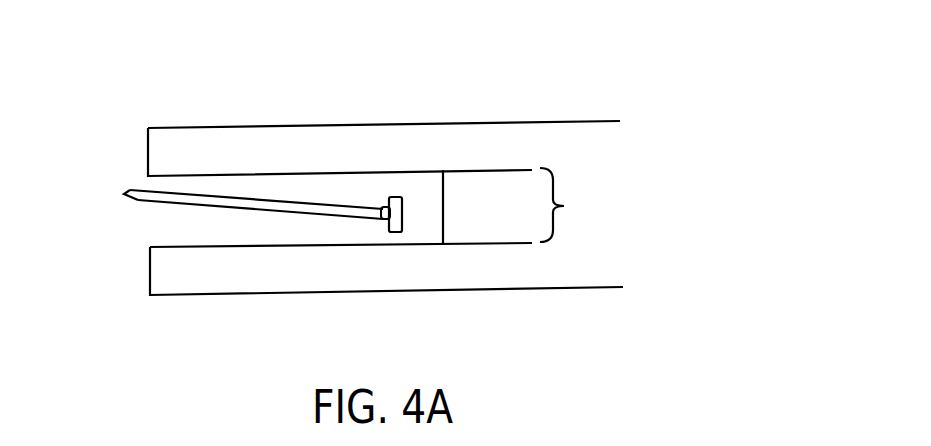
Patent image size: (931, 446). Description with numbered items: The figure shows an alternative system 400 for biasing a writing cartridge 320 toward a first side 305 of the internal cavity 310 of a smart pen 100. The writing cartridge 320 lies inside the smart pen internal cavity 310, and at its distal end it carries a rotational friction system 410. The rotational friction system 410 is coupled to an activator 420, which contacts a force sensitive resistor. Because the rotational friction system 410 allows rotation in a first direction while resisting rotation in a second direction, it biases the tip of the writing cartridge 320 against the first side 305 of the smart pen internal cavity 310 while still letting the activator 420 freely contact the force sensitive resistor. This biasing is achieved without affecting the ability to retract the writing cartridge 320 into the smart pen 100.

The smart pen 100 is at (459, 122).
The first side 305 is at (320, 150).
The smart pen internal cavity 310 is at (574, 205).
The writing cartridge 320 is at (140, 196).
The system 400 is at (383, 60).
The rotational friction system 410 is at (381, 220).
The activator 420 is at (404, 218).